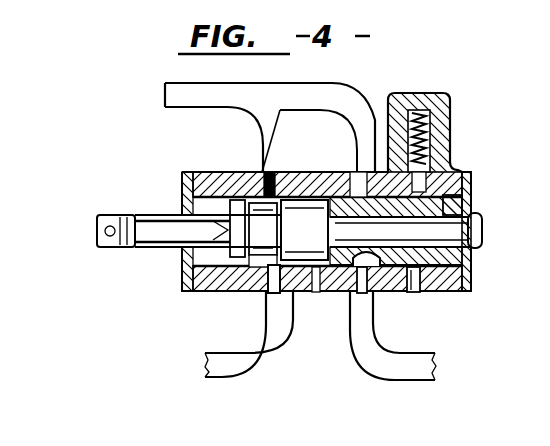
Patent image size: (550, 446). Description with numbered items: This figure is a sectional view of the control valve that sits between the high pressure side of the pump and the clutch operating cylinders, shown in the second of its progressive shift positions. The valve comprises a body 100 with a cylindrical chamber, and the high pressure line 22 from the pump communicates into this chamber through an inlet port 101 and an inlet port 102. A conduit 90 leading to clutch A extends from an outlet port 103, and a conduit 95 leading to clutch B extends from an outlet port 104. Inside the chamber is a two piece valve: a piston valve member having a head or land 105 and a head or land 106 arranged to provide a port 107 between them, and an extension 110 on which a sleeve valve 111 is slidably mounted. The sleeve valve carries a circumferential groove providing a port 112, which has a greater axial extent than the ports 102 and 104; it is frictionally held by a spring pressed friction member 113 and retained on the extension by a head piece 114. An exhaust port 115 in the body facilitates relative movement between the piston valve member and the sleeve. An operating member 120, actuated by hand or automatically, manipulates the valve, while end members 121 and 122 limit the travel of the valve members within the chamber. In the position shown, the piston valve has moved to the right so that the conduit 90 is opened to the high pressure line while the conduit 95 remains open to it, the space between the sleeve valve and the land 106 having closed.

The high pressure line 22 is at (165, 95).
The conduit 90 is at (203, 362).
The conduit 95 is at (440, 368).
The body 100 is at (213, 172).
The inlet port 101 is at (263, 172).
The inlet port 102 is at (361, 190).
The outlet port 103 is at (247, 293).
The outlet port 104 is at (348, 330).
The head or land 105 is at (182, 250).
The head or land 106 is at (268, 148).
The port 107 is at (228, 292).
The extension 110 is at (468, 208).
The sleeve valve 111 is at (462, 259).
The port 112 is at (391, 293).
The spring pressed friction member 113 is at (455, 158).
The head piece 114 is at (480, 243).
The exhaust port 115 is at (310, 293).
The operating member 120 is at (113, 214).
The end member 121 is at (181, 172).
The end member 122 is at (470, 175).